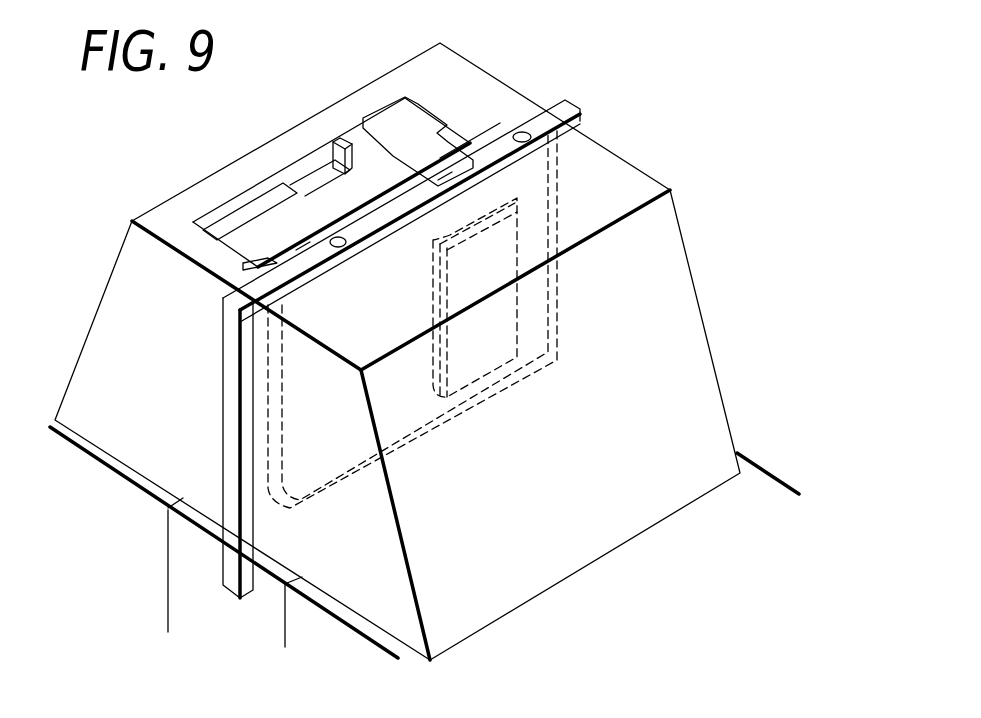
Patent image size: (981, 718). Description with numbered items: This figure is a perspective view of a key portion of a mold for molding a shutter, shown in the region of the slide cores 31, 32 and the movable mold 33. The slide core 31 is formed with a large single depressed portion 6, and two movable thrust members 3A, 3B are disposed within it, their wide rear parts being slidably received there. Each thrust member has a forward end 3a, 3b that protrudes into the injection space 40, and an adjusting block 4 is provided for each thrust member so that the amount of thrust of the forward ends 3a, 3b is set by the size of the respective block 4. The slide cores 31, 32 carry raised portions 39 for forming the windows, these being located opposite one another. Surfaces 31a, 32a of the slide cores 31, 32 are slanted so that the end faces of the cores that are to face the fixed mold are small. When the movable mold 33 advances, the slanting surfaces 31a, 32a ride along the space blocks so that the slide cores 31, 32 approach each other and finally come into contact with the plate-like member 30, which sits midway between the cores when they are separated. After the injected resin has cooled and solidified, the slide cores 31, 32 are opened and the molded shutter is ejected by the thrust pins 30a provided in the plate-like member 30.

The thrust member 3A is at (408, 127).
The thrust member 3B is at (253, 213).
The forward end 3a is at (445, 176).
The forward end 3b is at (302, 255).
The adjusting block 4 is at (220, 207).
The depressed portion 6 is at (323, 177).
The plate-like member 30 is at (573, 110).
The thrust pin 30a is at (515, 132).
The slide core 31 is at (465, 67).
The slanting surface 31a is at (97, 307).
The slide core 32 is at (608, 163).
The slanting surface 32a is at (690, 290).
The movable mold 33 is at (190, 531).
The raised portion 39 is at (520, 250).
The injection space 40 is at (473, 138).